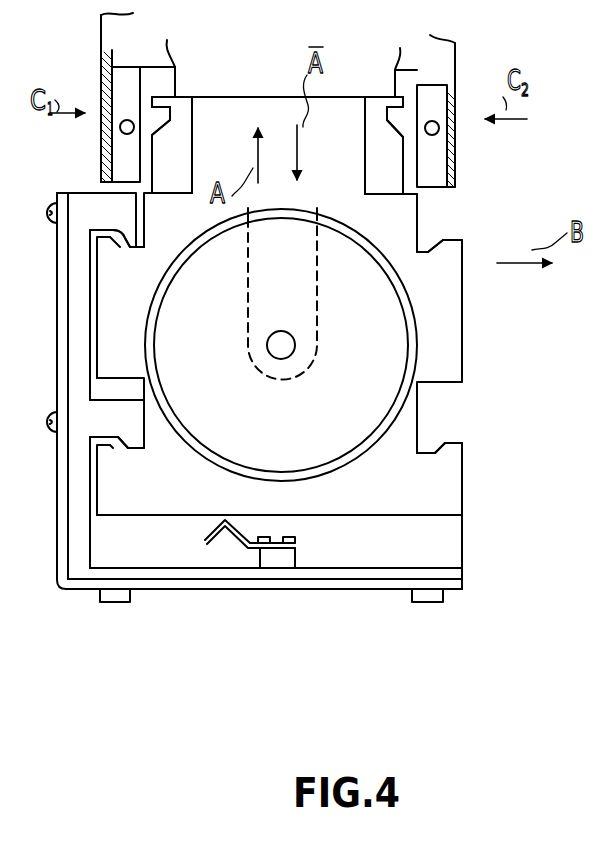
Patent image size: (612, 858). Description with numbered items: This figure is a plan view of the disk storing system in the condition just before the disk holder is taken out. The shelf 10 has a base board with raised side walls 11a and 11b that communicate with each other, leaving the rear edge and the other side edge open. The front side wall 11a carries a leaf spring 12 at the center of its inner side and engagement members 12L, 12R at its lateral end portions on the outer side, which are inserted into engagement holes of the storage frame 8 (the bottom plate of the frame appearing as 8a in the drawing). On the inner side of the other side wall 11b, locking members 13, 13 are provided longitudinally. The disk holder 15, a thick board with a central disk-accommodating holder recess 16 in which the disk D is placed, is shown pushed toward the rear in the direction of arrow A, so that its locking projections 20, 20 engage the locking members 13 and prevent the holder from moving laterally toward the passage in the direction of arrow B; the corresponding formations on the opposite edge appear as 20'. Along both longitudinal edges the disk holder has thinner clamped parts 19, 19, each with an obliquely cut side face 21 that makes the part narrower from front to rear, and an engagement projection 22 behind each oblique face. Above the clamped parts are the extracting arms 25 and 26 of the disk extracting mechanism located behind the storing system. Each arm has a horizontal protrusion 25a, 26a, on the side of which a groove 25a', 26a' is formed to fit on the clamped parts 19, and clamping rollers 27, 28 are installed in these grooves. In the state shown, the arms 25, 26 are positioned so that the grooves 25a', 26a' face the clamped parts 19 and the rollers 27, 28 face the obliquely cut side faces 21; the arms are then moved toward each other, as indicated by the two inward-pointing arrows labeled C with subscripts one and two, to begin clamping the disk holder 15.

The storage frame 8 is at (335, 597).
The bottom plate upper surface 8a is at (273, 592).
The shelf 10 is at (452, 555).
The side wall 11a is at (370, 578).
The side wall 11b is at (70, 529).
The leaf spring 12 is at (235, 537).
The engagement member 12L is at (120, 602).
The engagement member 12R is at (433, 603).
The locking member 13 is at (118, 232).
The disk holder 15 is at (470, 373).
The holder recess 16 is at (420, 350).
The clamped part 19 is at (188, 162).
The locking projection 20 is at (80, 355).
The hook 20' is at (482, 340).
The obliquely cut side face 21 is at (167, 132).
The engagement projection 22 is at (163, 97).
The extracting arm 25 is at (90, 128).
The horizontal protrusion 25a is at (91, 97).
The groove 25a' is at (72, 175).
The extracting arm 26 is at (460, 157).
The horizontal protrusion 26a is at (490, 111).
The groove 26a' is at (503, 199).
The clamping roller 27 is at (126, 119).
The clamping roller 28 is at (437, 122).
The disk D is at (393, 315).